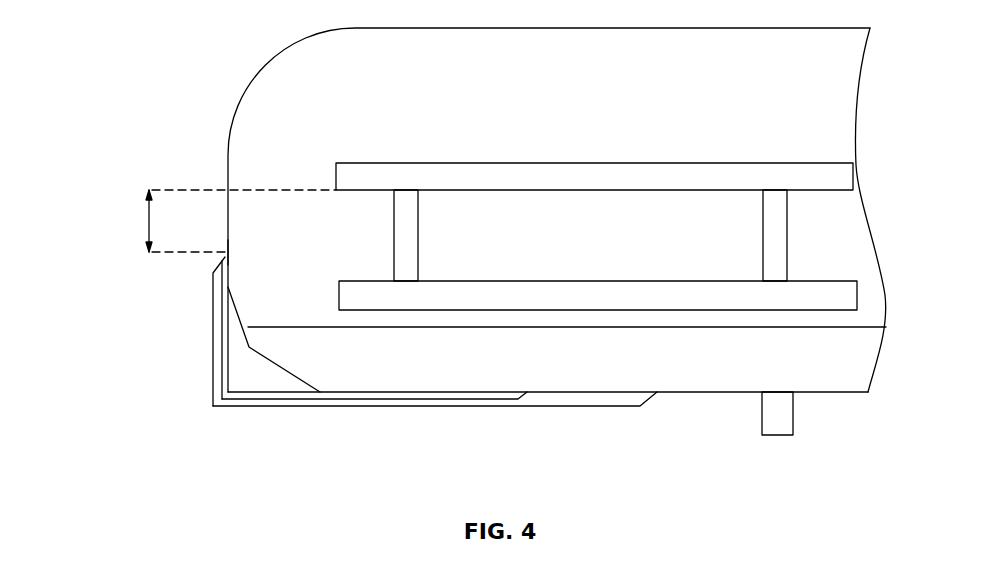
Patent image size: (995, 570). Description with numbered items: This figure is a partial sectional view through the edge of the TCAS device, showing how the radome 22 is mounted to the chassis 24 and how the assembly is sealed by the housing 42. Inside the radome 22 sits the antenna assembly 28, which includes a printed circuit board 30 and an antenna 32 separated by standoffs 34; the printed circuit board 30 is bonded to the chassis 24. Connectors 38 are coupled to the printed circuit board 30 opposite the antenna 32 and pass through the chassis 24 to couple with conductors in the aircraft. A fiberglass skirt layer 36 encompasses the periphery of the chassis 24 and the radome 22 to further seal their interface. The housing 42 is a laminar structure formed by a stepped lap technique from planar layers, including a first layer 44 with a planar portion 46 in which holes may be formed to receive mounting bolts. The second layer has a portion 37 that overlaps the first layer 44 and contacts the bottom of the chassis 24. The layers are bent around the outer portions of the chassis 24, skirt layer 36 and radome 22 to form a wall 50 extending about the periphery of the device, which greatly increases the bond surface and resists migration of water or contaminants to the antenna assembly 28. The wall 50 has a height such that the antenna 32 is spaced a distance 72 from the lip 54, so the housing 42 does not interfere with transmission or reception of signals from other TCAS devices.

The radome 22 is at (270, 67).
The chassis 24 is at (687, 375).
The antenna assembly 28 is at (580, 197).
The printed circuit board 30 is at (355, 280).
The antenna 32 is at (430, 160).
The standoffs 34 is at (418, 235).
The skirt layer 36 is at (242, 357).
The portion 37 is at (553, 405).
The connectors 38 is at (777, 437).
The housing 42 is at (396, 345).
The first layer 44 is at (225, 313).
The planar portion 46 is at (440, 392).
The wall 50 is at (225, 360).
The lip 54 is at (227, 252).
The distance 72 is at (147, 222).